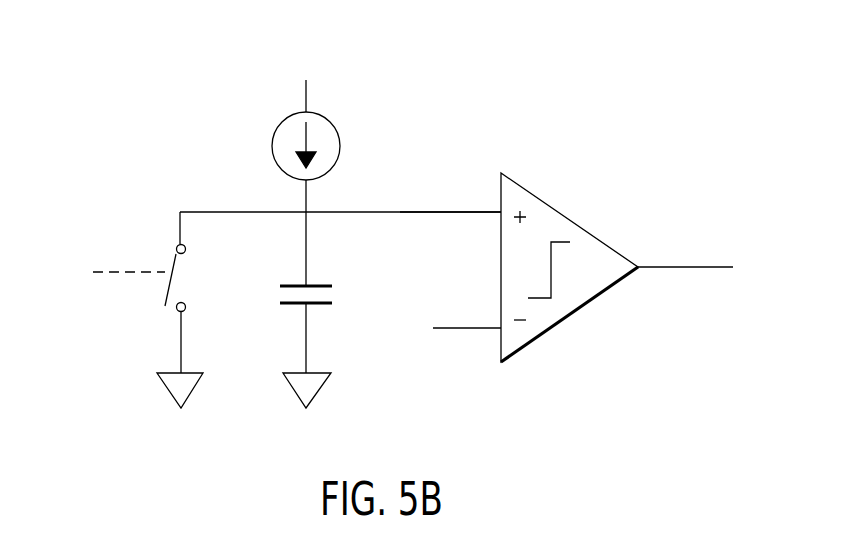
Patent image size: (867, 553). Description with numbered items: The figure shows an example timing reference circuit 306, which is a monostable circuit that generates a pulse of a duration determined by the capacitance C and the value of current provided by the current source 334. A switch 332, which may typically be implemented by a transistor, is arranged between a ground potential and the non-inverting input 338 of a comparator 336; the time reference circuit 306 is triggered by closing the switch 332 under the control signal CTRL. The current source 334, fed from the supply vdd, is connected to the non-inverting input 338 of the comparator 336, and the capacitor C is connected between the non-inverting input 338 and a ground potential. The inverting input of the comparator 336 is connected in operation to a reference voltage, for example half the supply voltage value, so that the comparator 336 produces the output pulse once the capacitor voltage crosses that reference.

The timing reference circuit 306 is at (173, 122).
The switch 332 is at (172, 262).
The current source 334 is at (338, 130).
The comparator 336 is at (570, 218).
The non-inverting input 338 is at (428, 207).